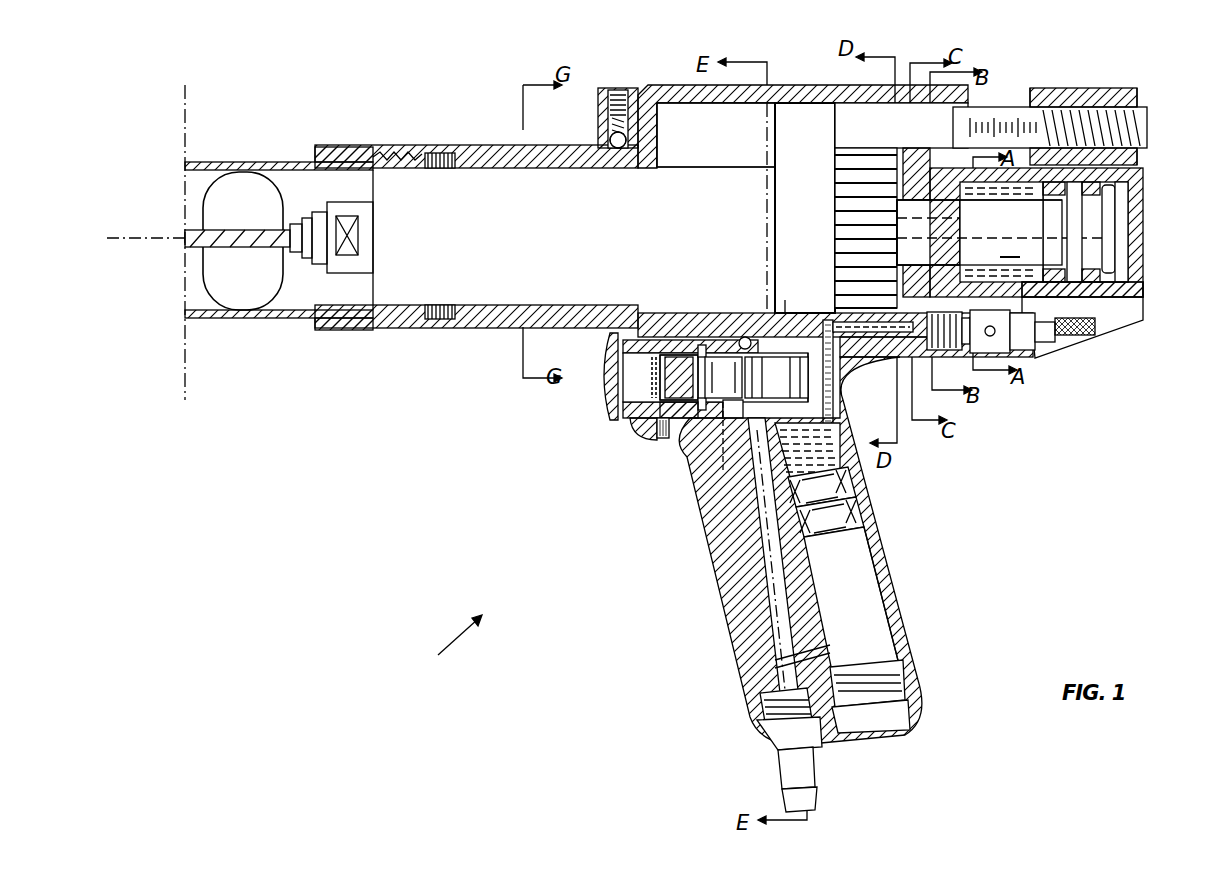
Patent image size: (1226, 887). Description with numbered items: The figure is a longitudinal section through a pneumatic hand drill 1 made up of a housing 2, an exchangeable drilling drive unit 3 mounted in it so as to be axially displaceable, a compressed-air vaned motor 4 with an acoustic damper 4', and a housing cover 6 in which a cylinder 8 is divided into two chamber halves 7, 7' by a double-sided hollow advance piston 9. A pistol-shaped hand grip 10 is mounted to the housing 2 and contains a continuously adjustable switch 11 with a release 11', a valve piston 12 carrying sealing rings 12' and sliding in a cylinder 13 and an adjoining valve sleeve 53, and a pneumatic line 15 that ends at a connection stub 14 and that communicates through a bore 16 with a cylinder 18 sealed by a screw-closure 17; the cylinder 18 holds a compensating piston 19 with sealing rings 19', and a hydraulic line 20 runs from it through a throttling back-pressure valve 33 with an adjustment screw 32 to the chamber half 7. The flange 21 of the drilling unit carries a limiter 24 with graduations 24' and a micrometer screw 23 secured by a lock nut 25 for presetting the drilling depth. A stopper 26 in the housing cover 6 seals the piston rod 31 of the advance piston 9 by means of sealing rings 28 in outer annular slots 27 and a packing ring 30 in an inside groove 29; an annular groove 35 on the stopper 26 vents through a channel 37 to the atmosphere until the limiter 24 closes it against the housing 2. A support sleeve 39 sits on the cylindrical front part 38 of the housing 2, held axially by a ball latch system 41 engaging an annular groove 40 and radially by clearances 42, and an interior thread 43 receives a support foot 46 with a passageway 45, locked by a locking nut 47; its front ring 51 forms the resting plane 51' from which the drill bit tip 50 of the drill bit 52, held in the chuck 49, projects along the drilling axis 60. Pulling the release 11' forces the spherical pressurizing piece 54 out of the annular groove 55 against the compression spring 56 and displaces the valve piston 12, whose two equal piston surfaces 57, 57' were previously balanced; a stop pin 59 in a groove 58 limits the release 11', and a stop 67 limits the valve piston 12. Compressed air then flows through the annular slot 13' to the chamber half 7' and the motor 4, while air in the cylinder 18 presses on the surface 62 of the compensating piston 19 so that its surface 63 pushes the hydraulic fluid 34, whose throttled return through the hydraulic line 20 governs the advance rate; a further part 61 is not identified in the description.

The hand drill 1 is at (450, 644).
The housing 2 is at (668, 85).
The exchangeable drilling drive unit 3 is at (700, 180).
The compressed-air vaned motor 4 is at (716, 135).
The acoustic damper 4' is at (848, 173).
The housing cover 6 is at (1138, 190).
The chamber half 7 is at (1082, 298).
The chamber half 7' is at (1147, 244).
The cylinder 8 is at (1142, 175).
The advance piston 9 is at (1098, 260).
The hand grip 10 is at (720, 607).
The continuously adjustable switch 11 is at (683, 393).
The release 11' is at (586, 376).
The valve piston 12 is at (776, 377).
The sealing rings 12' is at (680, 337).
The cylinder 13 is at (790, 299).
The annular slot 13' is at (717, 335).
The connection stub 14 is at (782, 770).
The pneumatic line 15 is at (770, 655).
The bore 16 is at (820, 680).
The screw-closure 17 is at (905, 674).
The cylinder 18 is at (870, 603).
The compensating piston 19 is at (857, 522).
The sealing rings 19' is at (861, 495).
The hydraulic line 20 is at (826, 330).
The flange 21 is at (806, 112).
The micrometer screw 23 is at (1005, 118).
The limiter 24 is at (1083, 103).
The graduations 24' is at (1049, 69).
The lock nut 25 is at (1138, 95).
The stopper 26 is at (968, 232).
The outer annular slots 27 is at (950, 185).
The sealing rings 28 is at (866, 135).
The inside groove 29 is at (1008, 232).
The packing ring 30 is at (1009, 222).
The piston rod 31 is at (1007, 255).
The adjustment screw 32 is at (1097, 330).
The throttling back-pressure valve 33 is at (1035, 345).
The hydraulic fluid 34 is at (862, 456).
The annular groove 35 is at (928, 233).
The channel 37 is at (1001, 232).
The cylindrical front part 38 is at (500, 320).
The support sleeve 39 is at (490, 150).
The annular groove 40 is at (620, 148).
The ball notch or latch system 41 is at (598, 110).
The clearances 42 is at (615, 168).
The thread 43 is at (440, 154).
The passageway 45 is at (242, 182).
The support foot 46 is at (300, 319).
The locking nut 47 is at (327, 148).
The chuck 49 is at (360, 244).
The drill bit tip 50 is at (186, 241).
The front ring 51 is at (251, 239).
The resting plane 51' is at (152, 242).
The drill bit 52 is at (240, 246).
The valve sleeve 53 is at (720, 420).
The spherical pressurizing piece 54 is at (622, 340).
The annular groove 55 is at (624, 340).
The compression spring 56 is at (655, 355).
The piston surface 57 is at (759, 413).
The piston surface 57' is at (672, 449).
The groove 58 is at (640, 420).
The stop pin 59 is at (660, 440).
The drilling axis 60 is at (115, 252).
The valve disk 61 is at (1115, 262).
The surface 62 is at (840, 545).
The surface 63 is at (828, 443).
The stop 67 is at (745, 337).